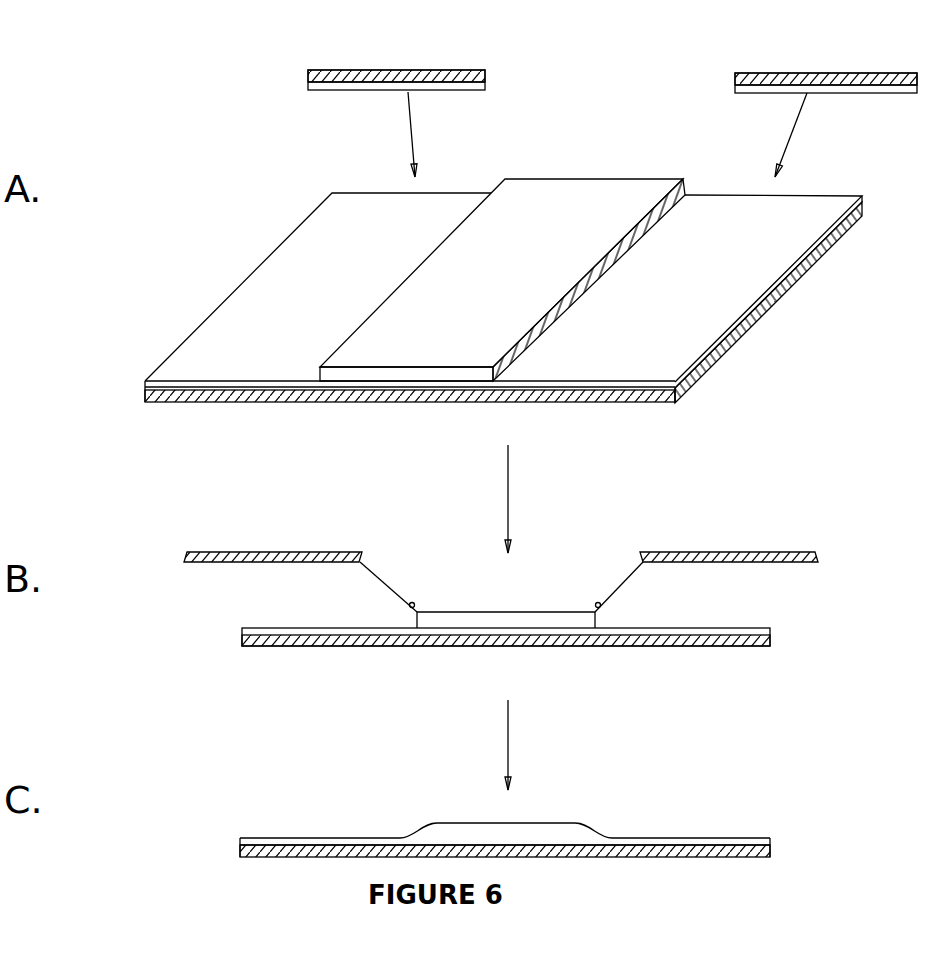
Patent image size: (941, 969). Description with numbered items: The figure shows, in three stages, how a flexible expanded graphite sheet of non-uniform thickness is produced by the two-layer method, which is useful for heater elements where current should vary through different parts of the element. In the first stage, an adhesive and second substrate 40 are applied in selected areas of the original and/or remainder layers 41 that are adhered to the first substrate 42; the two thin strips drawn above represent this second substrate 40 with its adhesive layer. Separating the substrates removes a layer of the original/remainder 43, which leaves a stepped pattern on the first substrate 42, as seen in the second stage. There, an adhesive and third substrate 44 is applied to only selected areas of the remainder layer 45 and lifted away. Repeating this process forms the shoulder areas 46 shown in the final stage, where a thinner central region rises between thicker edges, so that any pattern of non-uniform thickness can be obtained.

The second substrate 40 is at (531, 211).
The original and/or remainder layers 41 is at (502, 255).
The first substrate 42 is at (468, 529).
The layer of the original/remainder 43 is at (612, 100).
The third substrate 44 is at (505, 582).
The remainder layer 45 is at (516, 652).
The shoulder areas 46 is at (505, 810).